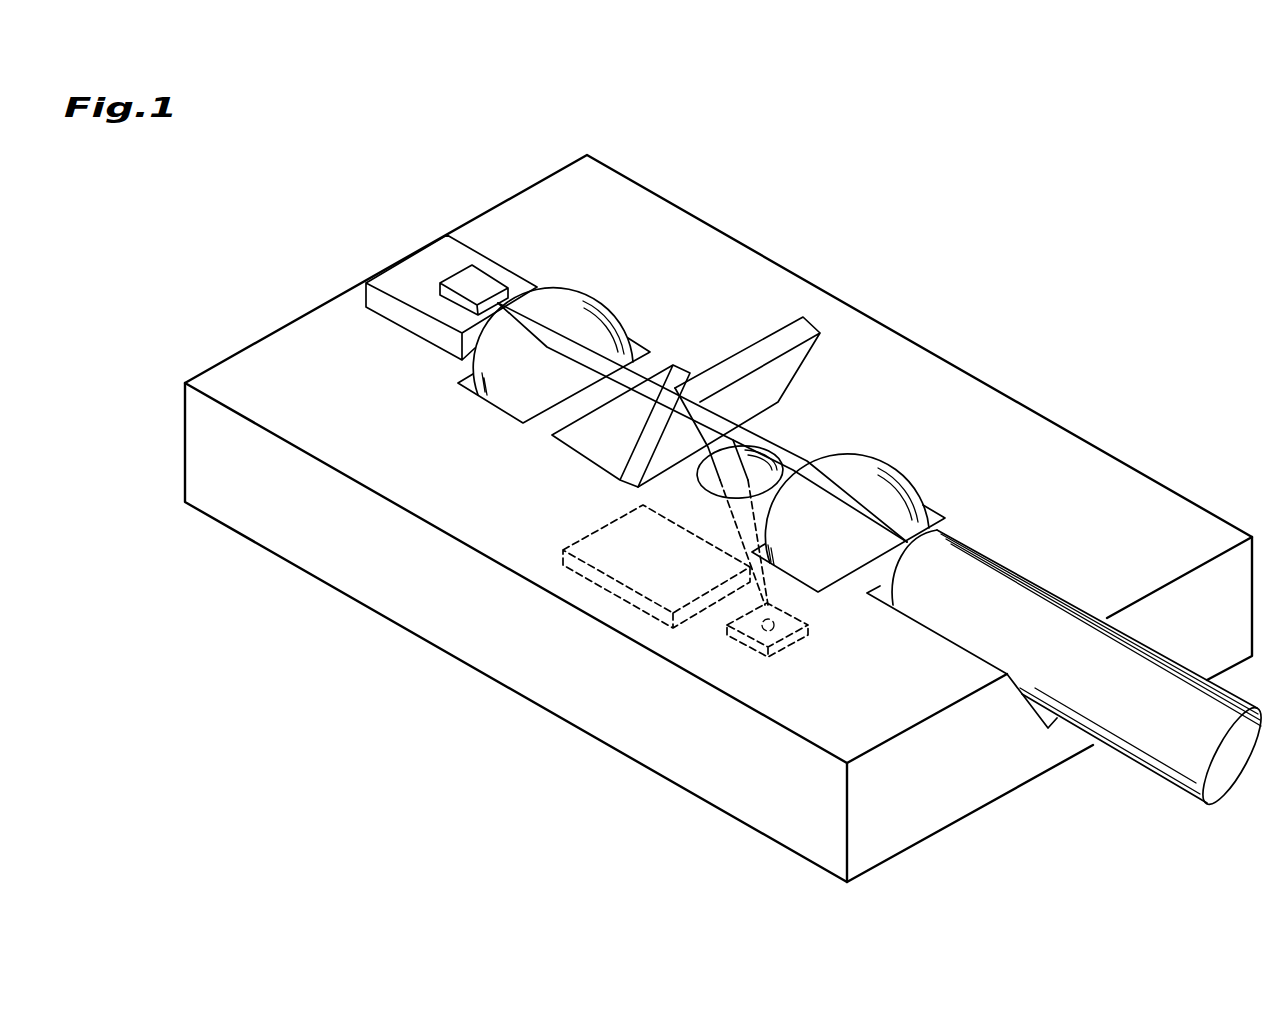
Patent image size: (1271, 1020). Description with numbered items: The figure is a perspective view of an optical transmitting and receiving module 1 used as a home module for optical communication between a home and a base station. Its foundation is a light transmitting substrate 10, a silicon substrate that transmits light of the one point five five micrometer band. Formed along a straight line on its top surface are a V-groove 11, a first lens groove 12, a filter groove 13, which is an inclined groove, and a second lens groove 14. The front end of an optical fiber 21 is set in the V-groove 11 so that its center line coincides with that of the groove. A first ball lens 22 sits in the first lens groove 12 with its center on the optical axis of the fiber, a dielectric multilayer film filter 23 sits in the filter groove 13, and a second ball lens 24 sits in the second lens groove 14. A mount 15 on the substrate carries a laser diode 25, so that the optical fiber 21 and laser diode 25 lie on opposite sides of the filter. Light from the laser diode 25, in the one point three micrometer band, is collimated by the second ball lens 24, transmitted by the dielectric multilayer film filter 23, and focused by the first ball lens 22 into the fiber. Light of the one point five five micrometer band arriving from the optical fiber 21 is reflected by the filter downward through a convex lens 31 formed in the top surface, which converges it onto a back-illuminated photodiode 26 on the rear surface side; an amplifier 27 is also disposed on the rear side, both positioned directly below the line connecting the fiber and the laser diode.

The optical transmitting and receiving module 1 is at (1032, 367).
The light transmitting substrate 10 is at (777, 812).
The V-groove 11 is at (1035, 716).
The first lens groove 12 is at (842, 567).
The filter groove 13 is at (602, 457).
The second lens groove 14 is at (467, 395).
The mount 15 is at (398, 275).
The optical fiber 21 is at (1130, 743).
The first ball lens 22 is at (883, 492).
The dielectric multilayer film filter 23 is at (742, 360).
The second ball lens 24 is at (592, 320).
The laser diode 25 is at (483, 283).
The photodiode 26 is at (747, 640).
The amplifier 27 is at (620, 595).
The convex lens 31 is at (770, 445).